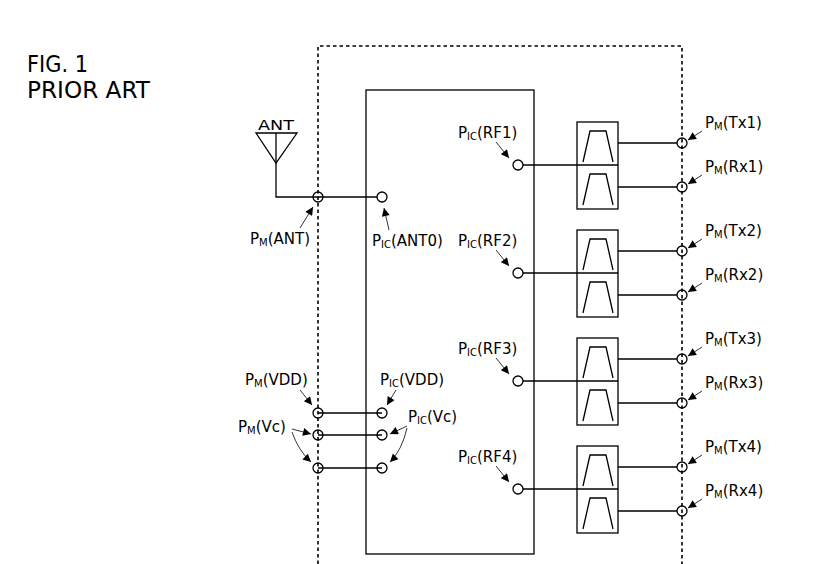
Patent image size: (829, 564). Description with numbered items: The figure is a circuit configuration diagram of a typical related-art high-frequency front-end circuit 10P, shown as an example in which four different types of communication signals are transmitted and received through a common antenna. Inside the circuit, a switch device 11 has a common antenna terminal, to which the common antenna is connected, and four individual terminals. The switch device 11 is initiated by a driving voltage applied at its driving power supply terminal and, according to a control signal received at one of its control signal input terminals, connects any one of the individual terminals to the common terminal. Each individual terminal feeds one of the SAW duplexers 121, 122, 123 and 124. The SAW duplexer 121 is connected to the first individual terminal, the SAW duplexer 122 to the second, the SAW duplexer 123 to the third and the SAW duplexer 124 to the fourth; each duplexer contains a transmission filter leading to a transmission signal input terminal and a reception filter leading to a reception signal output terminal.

The high-frequency front-end circuit 10P is at (640, 46).
The switch device 11 is at (393, 89).
The SAW duplexer 121 is at (622, 133).
The SAW duplexer 122 is at (622, 241).
The SAW duplexer 123 is at (622, 349).
The SAW duplexer 124 is at (622, 457).